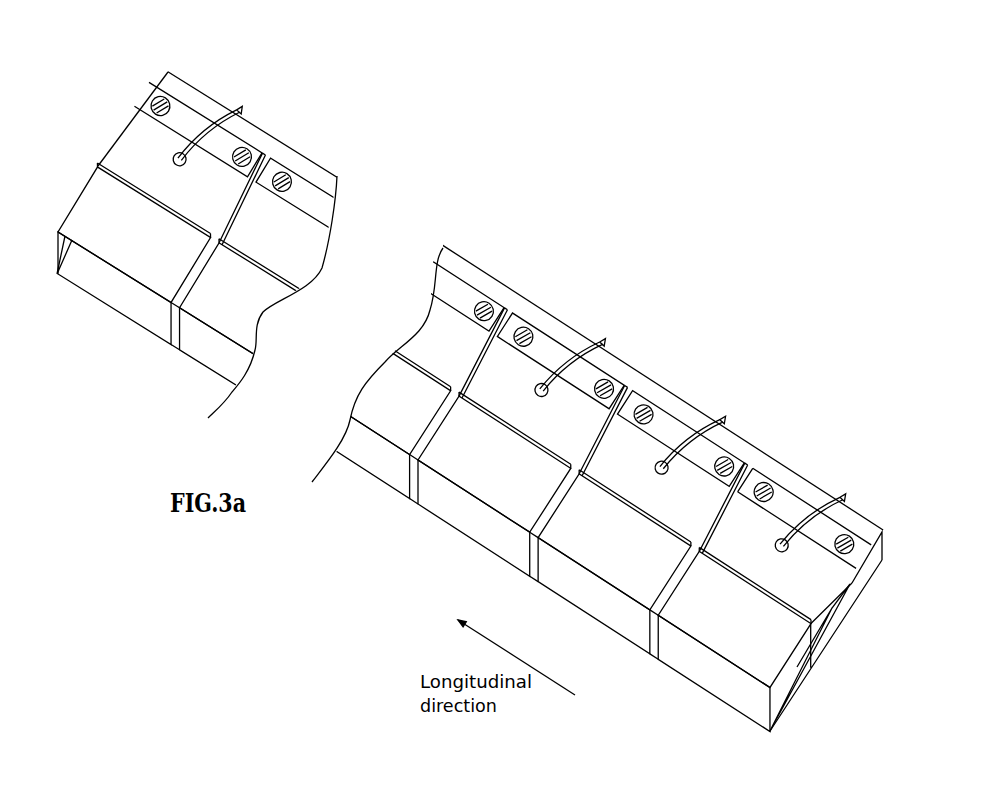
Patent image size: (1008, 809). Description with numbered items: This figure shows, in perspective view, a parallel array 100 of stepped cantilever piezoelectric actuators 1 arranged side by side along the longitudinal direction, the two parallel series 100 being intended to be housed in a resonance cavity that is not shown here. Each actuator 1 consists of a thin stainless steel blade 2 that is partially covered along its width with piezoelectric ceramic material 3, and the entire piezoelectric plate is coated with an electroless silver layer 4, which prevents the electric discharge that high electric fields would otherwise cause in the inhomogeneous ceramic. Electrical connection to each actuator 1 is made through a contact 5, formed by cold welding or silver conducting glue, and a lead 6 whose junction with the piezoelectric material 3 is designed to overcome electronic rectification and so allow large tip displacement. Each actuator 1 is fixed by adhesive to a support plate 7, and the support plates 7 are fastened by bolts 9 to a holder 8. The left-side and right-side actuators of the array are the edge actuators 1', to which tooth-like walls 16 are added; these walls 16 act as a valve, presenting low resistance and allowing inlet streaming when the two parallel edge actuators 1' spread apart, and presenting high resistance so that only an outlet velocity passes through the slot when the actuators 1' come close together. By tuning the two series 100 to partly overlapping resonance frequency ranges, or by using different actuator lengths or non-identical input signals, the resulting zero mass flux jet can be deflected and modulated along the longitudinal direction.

The stepped cantilever piezoelectric actuator 1 is at (526, 516).
The edge actuator 1' is at (383, 474).
The thin stainless steel blade 2 is at (738, 699).
The piezoelectric ceramic material 3 is at (454, 348).
The electroless silver layer 4 is at (417, 330).
The contact 5 is at (491, 379).
The lead 6 is at (527, 285).
The support plate 7 is at (510, 352).
The holder 8 is at (877, 558).
The bolt 9 is at (517, 282).
The tooth-like wall 16 is at (464, 449).
The parallel series of piezoelectric actuators 100 is at (794, 312).